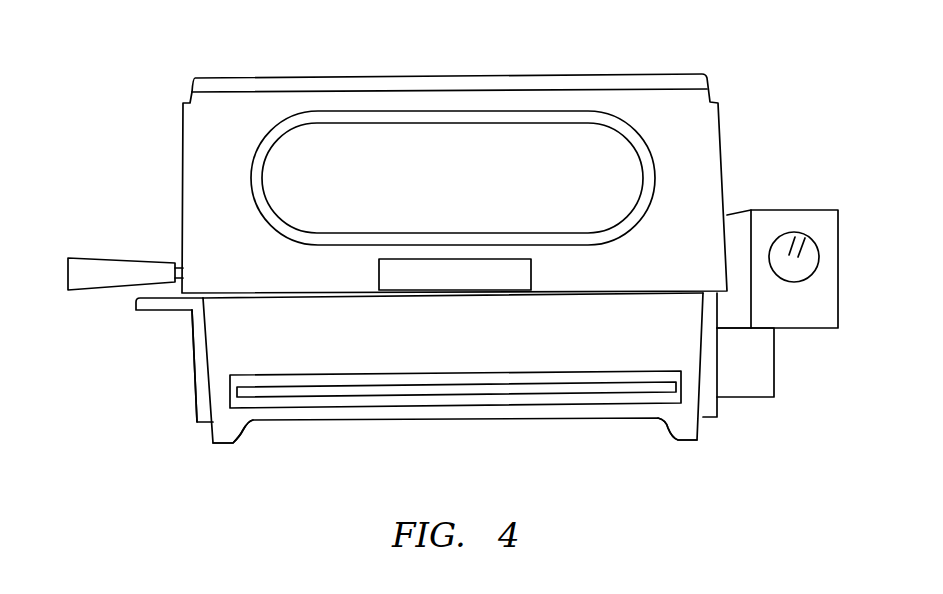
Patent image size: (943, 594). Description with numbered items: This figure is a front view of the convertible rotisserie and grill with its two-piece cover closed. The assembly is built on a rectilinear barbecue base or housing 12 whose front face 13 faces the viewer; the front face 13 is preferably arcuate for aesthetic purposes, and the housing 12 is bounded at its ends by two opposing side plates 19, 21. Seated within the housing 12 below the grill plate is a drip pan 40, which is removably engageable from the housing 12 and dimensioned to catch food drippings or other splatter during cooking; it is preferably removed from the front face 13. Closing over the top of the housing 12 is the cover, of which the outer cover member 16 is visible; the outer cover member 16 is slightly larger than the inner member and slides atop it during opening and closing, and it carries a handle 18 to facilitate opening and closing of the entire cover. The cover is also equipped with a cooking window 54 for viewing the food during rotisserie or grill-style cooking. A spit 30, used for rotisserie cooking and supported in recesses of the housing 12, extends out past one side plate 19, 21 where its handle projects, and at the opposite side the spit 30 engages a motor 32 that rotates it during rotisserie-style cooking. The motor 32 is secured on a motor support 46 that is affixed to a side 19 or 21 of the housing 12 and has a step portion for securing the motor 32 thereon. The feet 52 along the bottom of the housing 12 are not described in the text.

The barbecue base or housing 12 is at (190, 361).
The front face 13 is at (258, 342).
The outer cover member 16 is at (702, 145).
The handle 18 is at (390, 274).
The side plate 19 is at (197, 405).
The side plate 21 is at (717, 404).
The spit 30 is at (97, 258).
The motor 32 is at (814, 216).
The drip pan 40 is at (607, 396).
The motor support 46 is at (147, 312).
The feet 52 is at (238, 441).
The cooking window 54 is at (626, 152).